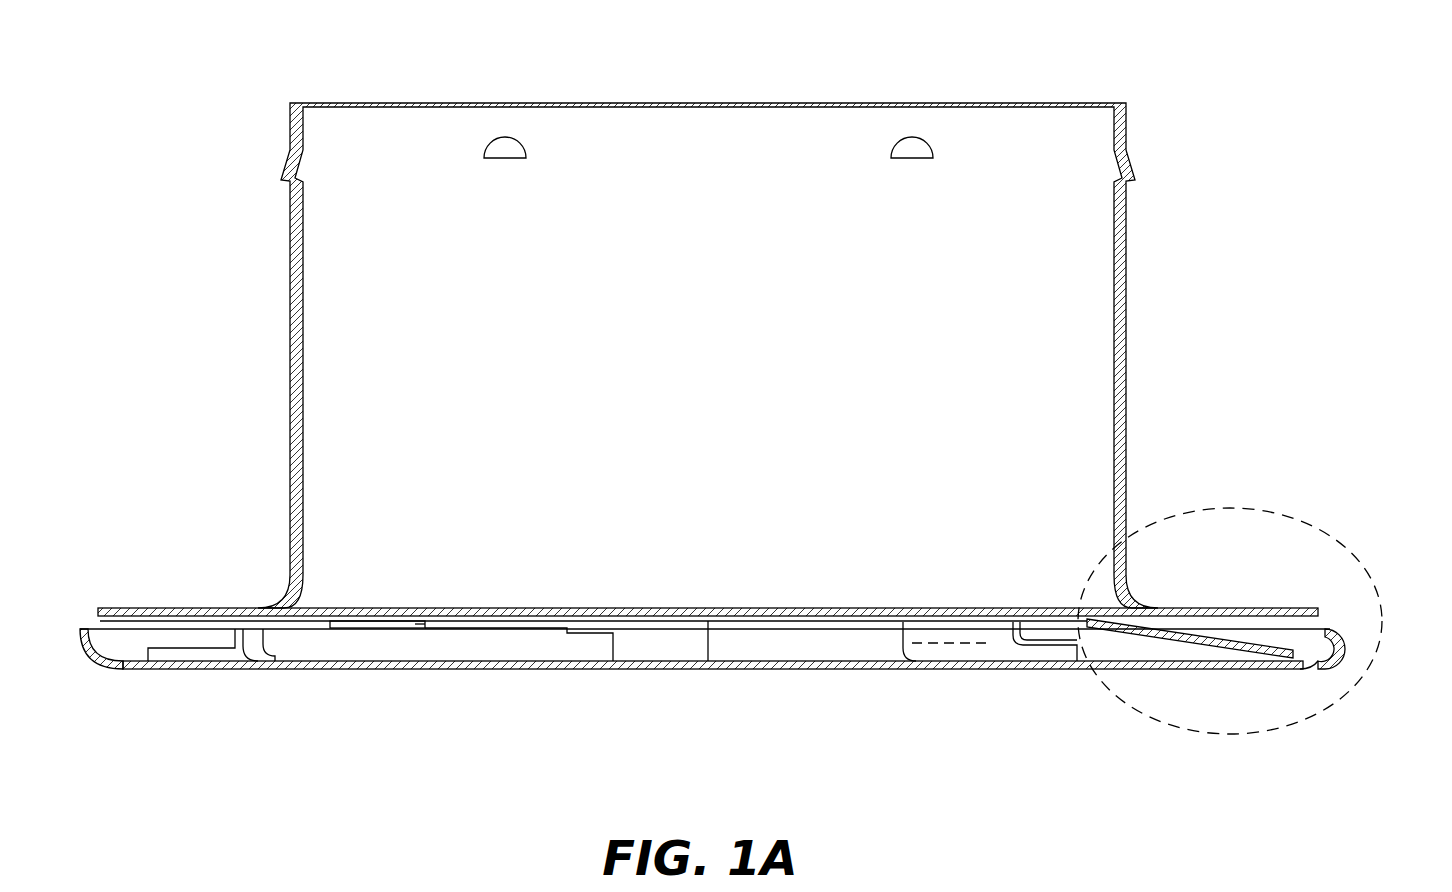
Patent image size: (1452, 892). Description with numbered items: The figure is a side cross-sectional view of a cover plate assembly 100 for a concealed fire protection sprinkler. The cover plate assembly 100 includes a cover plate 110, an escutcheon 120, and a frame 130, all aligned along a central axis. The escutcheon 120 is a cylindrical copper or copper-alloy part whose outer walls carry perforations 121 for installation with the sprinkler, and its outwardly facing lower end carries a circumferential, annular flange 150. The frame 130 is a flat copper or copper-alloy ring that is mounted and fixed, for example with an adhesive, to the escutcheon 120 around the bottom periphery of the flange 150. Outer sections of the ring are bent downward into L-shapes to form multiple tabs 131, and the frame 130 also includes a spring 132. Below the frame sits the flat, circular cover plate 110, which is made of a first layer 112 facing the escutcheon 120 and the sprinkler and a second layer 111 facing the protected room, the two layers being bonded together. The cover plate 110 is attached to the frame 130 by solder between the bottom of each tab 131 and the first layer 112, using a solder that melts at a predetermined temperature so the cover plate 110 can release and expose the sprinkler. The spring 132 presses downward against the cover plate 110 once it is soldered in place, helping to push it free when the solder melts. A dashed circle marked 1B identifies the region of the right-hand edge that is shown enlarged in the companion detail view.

The cover plate assembly 100 is at (316, 23).
The cover plate 110 is at (325, 669).
The second layer 111 is at (1318, 668).
The first layer 112 is at (1334, 632).
The escutcheon 120 is at (290, 321).
The perforations 121 is at (288, 172).
The frame 130 is at (488, 638).
The tabs 131 is at (183, 646).
The spring 132 is at (1215, 641).
The annular flange 150 is at (283, 592).
The detail region shown in FIG. 1B is at (1213, 506).